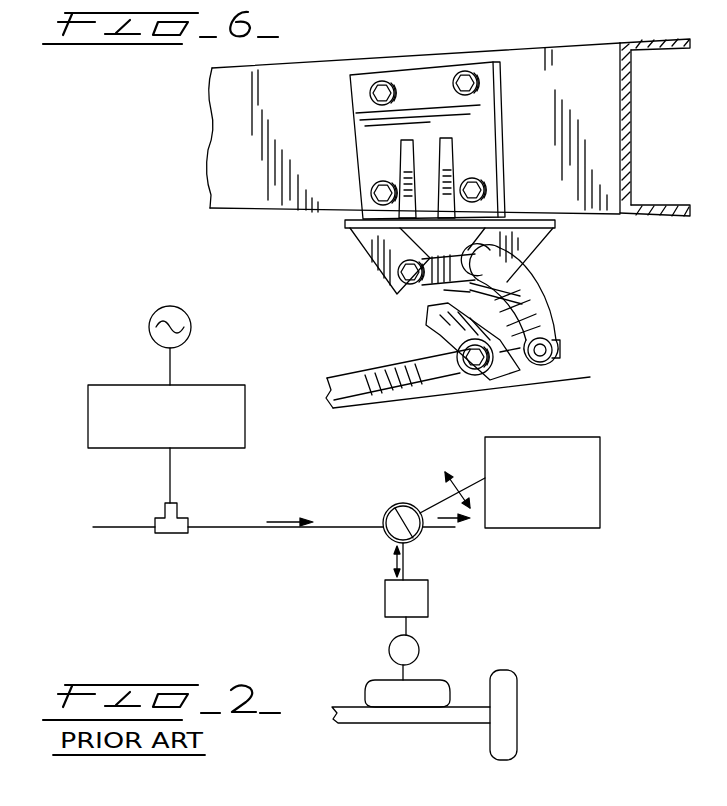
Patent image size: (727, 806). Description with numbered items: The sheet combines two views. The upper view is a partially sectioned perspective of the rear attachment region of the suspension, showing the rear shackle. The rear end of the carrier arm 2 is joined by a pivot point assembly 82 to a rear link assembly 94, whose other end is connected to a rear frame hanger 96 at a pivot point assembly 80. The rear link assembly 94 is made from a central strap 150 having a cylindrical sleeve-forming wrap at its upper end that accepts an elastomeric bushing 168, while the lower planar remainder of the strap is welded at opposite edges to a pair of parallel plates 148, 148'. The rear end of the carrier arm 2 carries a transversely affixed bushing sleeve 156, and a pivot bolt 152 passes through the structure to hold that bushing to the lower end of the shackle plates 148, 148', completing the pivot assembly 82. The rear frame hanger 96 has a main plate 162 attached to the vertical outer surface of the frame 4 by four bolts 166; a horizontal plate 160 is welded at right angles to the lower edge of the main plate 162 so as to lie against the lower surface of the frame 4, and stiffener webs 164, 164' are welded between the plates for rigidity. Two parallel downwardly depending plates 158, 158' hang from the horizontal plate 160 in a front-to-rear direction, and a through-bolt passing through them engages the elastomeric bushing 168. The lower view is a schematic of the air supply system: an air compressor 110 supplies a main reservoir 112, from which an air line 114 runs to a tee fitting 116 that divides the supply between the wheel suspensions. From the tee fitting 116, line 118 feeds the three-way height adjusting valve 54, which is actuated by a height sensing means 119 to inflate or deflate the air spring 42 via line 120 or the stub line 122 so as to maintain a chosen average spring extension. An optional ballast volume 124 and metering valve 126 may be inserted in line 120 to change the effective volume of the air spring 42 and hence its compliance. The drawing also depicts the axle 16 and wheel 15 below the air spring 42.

In FIG. 6, the frame 4 is at (318, 68).
In FIG. 6, the bolts 166 is at (370, 92).
In FIG. 6, the rear frame hanger 96 is at (438, 112).
In FIG. 6, the main plate 162 is at (500, 90).
In FIG. 6, the stiffener web 164 is at (360, 166).
In FIG. 6, the stiffener web 164' is at (491, 164).
In FIG. 6, the horizontal plate 160 is at (347, 224).
In FIG. 6, the downwardly depending plate 158 is at (539, 253).
In FIG. 6, the downwardly depending plate 158' is at (351, 261).
In FIG. 6, the pivot point assembly 80 is at (396, 268).
In FIG. 6, the elastomeric bushing 168 is at (440, 266).
In FIG. 6, the rear link assembly 94 is at (520, 292).
In FIG. 6, the central strap 150 is at (444, 291).
In FIG. 6, the parallel plate 148 is at (540, 305).
In FIG. 6, the parallel plate 148' is at (431, 341).
In FIG. 6, the pivot bolt 152 is at (456, 352).
In FIG. 6, the bushing sleeve 156 is at (508, 352).
In FIG. 6, the carrier arm 2 is at (337, 378).
In FIG. 6, the pivot point assembly 82 is at (560, 385).
In FIG. 2, the air compressor 110 is at (149, 333).
In FIG. 2, the main reservoir 112 is at (88, 410).
In FIG. 2, the air line 114 is at (170, 474).
In FIG. 2, the tee fitting 116 is at (172, 534).
In FIG. 2, the line 118 is at (333, 527).
In FIG. 2, the three-way height adjusting valve 54 is at (395, 503).
In FIG. 2, the height sensing means 119 is at (601, 484).
In FIG. 2, the stub line 122 is at (455, 530).
In FIG. 2, the line 120 is at (407, 562).
In FIG. 2, the ballast volume 124 is at (429, 600).
In FIG. 2, the metering valve 126 is at (419, 650).
In FIG. 2, the air spring 42 is at (430, 680).
In FIG. 2, the axle 16 is at (366, 724).
In FIG. 2, the wheel 15 is at (508, 672).